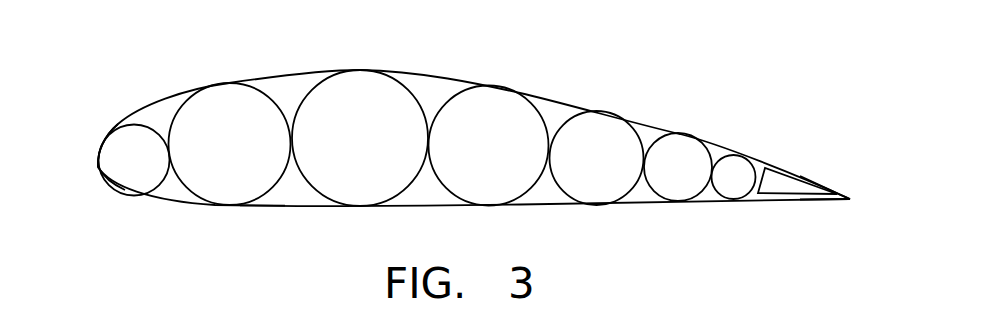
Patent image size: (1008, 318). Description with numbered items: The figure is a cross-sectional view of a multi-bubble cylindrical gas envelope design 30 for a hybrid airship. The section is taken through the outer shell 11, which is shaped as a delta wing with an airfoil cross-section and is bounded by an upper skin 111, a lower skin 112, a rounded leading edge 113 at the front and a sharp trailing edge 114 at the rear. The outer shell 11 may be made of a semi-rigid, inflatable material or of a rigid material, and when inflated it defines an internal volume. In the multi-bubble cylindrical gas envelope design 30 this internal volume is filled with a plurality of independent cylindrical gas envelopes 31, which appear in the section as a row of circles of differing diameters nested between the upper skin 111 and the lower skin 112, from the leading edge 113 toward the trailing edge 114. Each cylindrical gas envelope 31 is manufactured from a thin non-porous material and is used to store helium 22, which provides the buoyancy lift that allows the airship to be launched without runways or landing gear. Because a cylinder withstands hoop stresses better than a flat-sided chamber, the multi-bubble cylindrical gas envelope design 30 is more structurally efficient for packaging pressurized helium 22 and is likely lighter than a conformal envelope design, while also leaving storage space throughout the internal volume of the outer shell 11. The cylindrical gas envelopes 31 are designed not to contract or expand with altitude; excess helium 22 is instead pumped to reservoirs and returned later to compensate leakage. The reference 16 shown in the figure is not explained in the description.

The multi-bubble cylindrical gas envelope design 30 is at (143, 52).
The outer shell 11 is at (167, 204).
The upper skin 111 is at (423, 74).
The lower skin 112 is at (388, 207).
The leading edge 113 is at (98, 167).
The trailing edge 114 is at (850, 200).
The helium 22 is at (148, 170).
The cylindrical gas envelopes 31 is at (168, 182).
The chord direction 16 is at (260, 206).